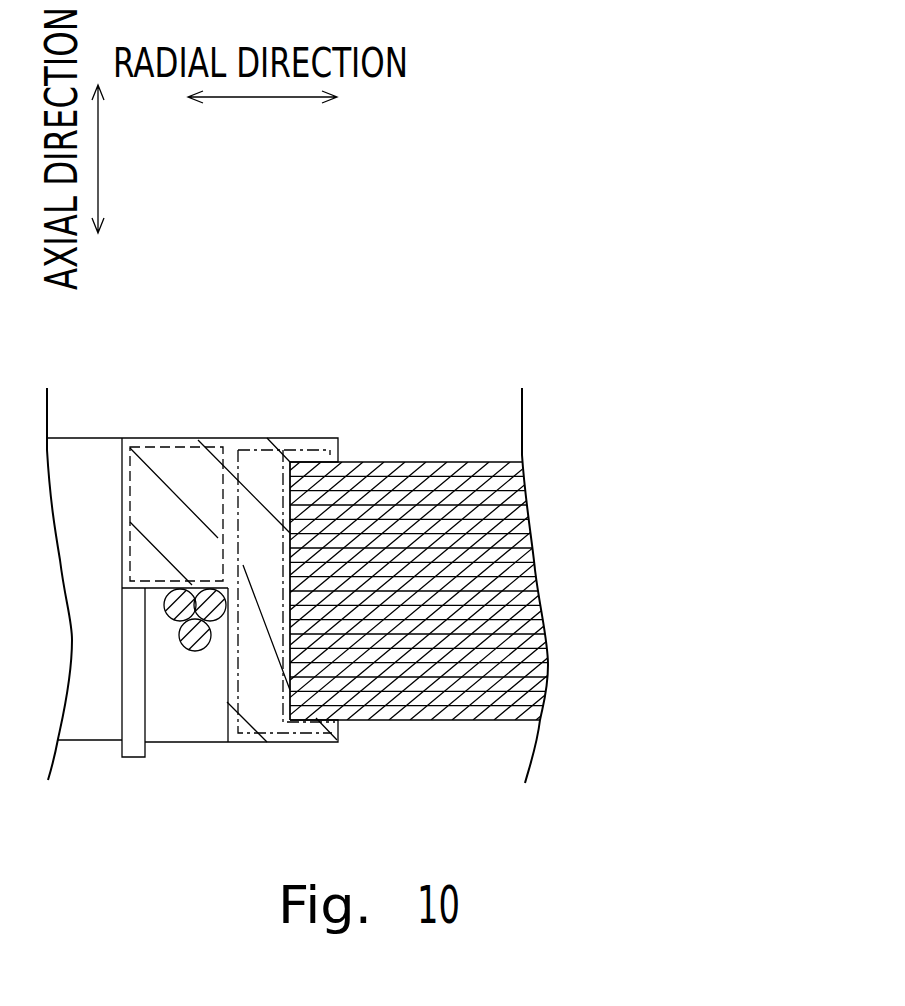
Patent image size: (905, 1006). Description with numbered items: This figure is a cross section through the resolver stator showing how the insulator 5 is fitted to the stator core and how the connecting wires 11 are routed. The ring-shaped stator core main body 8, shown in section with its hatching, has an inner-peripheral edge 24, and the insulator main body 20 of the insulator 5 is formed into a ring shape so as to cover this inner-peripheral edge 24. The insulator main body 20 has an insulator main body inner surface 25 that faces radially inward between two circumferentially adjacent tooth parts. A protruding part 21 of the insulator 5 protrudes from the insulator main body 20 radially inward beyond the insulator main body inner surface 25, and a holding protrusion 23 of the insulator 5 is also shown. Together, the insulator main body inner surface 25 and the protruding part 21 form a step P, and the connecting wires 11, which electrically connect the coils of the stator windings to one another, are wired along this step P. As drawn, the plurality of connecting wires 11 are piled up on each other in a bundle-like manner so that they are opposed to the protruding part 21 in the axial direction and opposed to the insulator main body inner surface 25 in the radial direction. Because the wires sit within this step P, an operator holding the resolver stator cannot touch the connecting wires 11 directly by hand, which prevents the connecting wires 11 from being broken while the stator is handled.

The insulator 5 is at (230, 510).
The stator core main body 8 is at (403, 487).
The connecting wire 11 is at (218, 612).
The insulator main body 20 is at (241, 549).
The protruding part 21 is at (168, 447).
The holding protrusion 23 is at (120, 760).
The inner-peripheral edge 24 is at (292, 555).
The insulator main body inner surface 25 is at (228, 720).
The step P is at (169, 676).